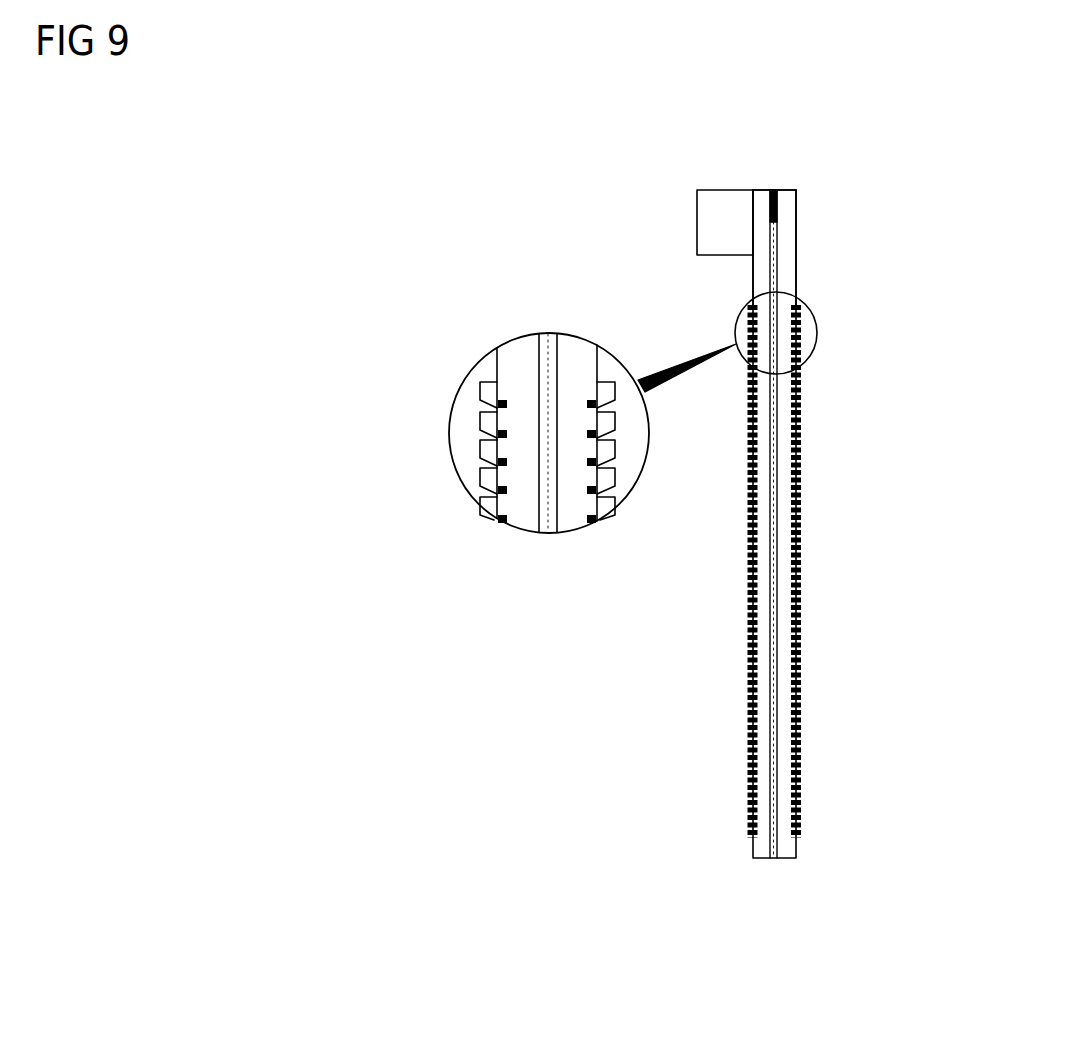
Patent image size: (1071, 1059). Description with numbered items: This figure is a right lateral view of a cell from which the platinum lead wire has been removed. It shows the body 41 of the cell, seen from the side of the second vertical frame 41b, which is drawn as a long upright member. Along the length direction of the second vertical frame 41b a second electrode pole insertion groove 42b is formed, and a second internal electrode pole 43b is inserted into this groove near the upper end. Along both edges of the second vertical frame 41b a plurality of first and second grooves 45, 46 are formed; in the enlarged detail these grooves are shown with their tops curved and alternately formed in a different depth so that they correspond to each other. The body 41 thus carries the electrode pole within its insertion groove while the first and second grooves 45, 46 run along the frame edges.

The body 41 is at (785, 858).
The second vertical frame 41b is at (797, 197).
The second electrode pole insertion groove 42b is at (771, 276).
The second internal electrode pole 43b is at (774, 190).
The first groove 45 is at (497, 403).
The second groove 46 is at (497, 434).